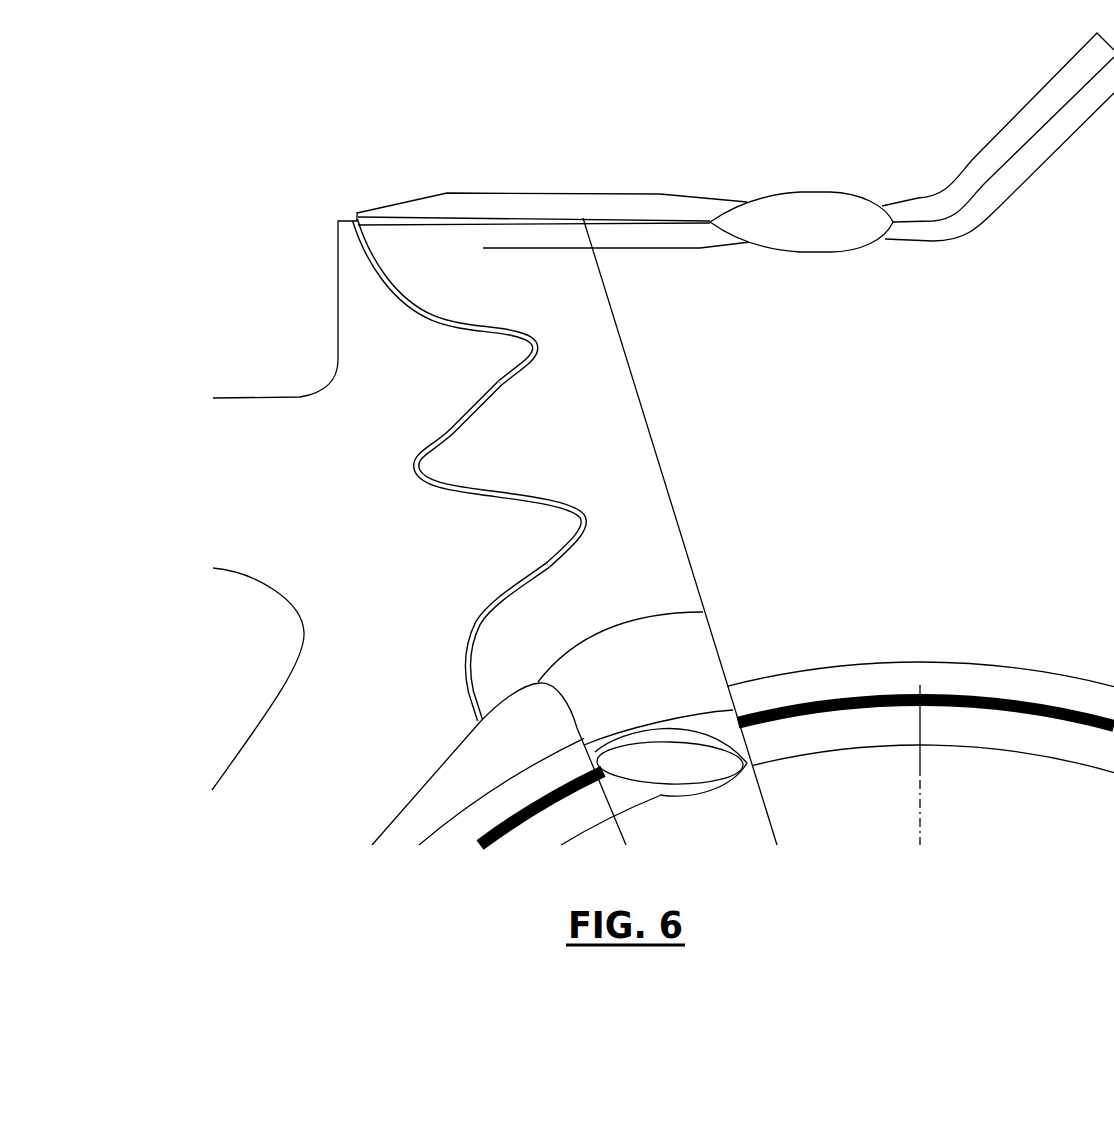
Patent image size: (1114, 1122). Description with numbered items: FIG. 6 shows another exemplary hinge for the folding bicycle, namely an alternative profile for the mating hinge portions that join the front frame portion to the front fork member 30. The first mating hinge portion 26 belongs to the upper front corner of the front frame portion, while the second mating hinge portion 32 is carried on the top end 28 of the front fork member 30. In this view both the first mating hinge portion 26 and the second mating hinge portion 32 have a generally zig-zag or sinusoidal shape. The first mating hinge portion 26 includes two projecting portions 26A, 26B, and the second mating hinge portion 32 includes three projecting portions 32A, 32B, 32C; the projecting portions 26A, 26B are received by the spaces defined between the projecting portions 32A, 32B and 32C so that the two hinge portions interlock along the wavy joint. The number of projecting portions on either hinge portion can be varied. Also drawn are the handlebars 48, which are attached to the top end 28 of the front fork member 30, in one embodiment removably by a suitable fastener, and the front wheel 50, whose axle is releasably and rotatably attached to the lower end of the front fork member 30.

The handlebars 48 is at (658, 196).
The first mating hinge portion 26 is at (362, 335).
The projecting portion 32A is at (493, 298).
The projecting portion 26A is at (489, 366).
The projecting portion 32B is at (506, 470).
The projecting portion 26B is at (526, 548).
The projecting portion 32C is at (547, 640).
The top end 28 is at (755, 406).
The second mating hinge portion 32 is at (657, 508).
The front wheel 50 is at (995, 664).
The front fork member 30 is at (745, 808).